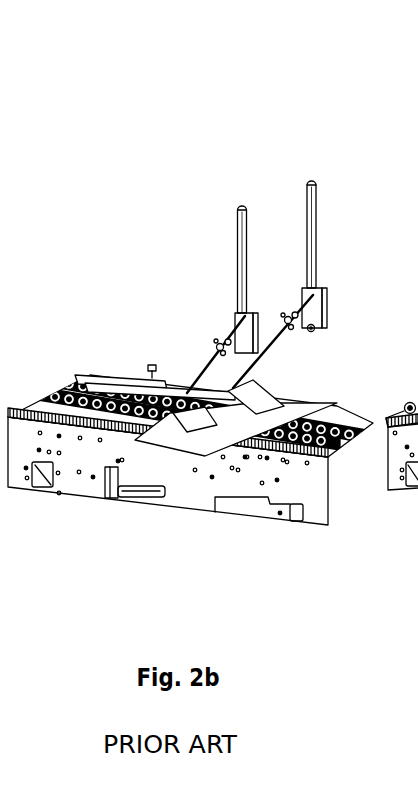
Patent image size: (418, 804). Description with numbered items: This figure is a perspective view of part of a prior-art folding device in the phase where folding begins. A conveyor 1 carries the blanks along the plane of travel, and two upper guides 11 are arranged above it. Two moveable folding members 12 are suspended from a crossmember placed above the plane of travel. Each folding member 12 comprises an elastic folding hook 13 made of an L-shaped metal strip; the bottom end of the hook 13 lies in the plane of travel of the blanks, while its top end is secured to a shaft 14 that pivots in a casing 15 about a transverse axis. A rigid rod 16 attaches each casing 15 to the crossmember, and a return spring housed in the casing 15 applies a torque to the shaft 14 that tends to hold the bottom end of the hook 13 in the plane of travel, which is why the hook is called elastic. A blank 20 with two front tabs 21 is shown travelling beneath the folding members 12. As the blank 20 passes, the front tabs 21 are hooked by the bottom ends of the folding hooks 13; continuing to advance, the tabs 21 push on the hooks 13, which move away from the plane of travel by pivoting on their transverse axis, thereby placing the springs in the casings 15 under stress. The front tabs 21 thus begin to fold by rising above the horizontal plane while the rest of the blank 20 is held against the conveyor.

The conveyor 1 is at (322, 545).
The upper guide 11 is at (180, 392).
The moveable folding member 12 is at (270, 207).
The elastic folding hook 13 is at (212, 342).
The shaft 14 is at (314, 330).
The casing 15 is at (327, 293).
The rigid rod 16 is at (240, 253).
The blank 20 is at (168, 438).
The front tab 21 is at (197, 423).